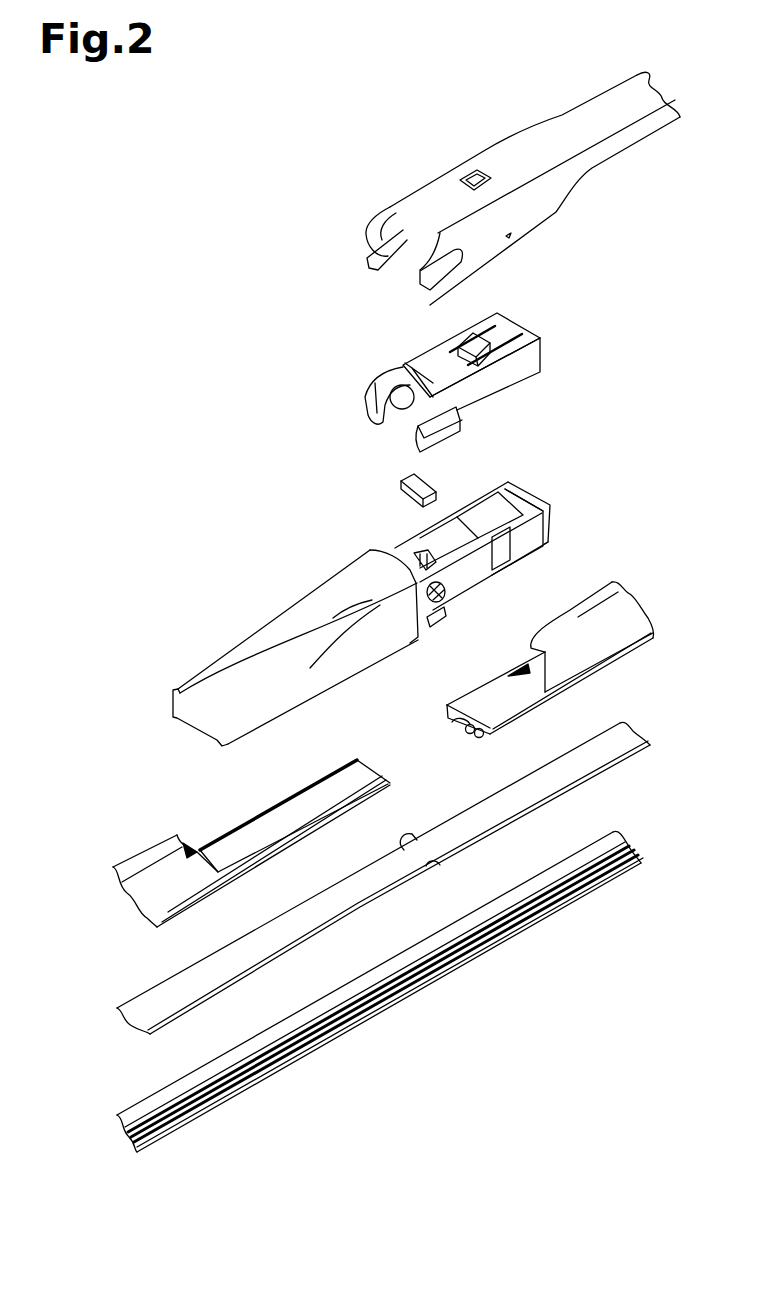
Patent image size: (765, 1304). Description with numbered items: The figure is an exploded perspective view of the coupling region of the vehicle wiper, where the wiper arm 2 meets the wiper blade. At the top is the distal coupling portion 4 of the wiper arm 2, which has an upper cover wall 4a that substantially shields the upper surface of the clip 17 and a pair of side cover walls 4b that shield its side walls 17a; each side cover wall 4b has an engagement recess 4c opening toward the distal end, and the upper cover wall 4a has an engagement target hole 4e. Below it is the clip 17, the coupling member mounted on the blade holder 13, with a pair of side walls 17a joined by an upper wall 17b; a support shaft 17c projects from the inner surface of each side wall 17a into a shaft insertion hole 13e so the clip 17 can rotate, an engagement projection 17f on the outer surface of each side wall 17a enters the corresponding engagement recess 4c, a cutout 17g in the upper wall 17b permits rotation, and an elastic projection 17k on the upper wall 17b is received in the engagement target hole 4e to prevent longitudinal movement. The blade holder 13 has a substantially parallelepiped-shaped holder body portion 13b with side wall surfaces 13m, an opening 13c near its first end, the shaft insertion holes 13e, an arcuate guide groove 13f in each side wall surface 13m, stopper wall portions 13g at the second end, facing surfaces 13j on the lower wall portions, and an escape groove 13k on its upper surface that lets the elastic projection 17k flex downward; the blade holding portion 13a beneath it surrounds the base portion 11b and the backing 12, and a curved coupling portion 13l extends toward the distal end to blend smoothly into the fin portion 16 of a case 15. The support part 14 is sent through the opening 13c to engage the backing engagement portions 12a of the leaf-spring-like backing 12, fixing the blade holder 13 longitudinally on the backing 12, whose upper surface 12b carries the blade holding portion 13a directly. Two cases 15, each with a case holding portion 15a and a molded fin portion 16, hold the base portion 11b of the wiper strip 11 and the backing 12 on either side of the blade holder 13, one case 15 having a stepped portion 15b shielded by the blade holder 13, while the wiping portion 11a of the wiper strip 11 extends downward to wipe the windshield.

The wiper arm 2 is at (630, 151).
The distal coupling portion 4 is at (504, 146).
The upper cover wall 4a is at (438, 190).
The side cover walls 4b is at (404, 255).
The engagement recess 4c is at (367, 256).
The engagement target hole 4e is at (485, 177).
The wiper strip 11 is at (290, 1020).
The wiping portion 11a is at (312, 1050).
The base portion 11b is at (232, 1062).
The backing 12 is at (329, 935).
The backing engagement portions 12a is at (441, 865).
The upper surface 12b is at (346, 888).
The blade holder 13 is at (342, 559).
The blade holding portion 13a is at (468, 607).
The holder body portion 13b is at (447, 524).
The opening 13c is at (430, 552).
The shaft insertion holes 13e is at (440, 604).
The guide groove 13f is at (515, 558).
The stopper wall portions 13g is at (551, 520).
The facing surface 13j is at (432, 628).
The escape groove 13k is at (532, 492).
The curved coupling portion 13l is at (272, 648).
The side wall surfaces 13m is at (484, 515).
The support part 14 is at (400, 490).
The case 15 is at (556, 692).
The case holding portion 15a is at (466, 736).
The stepped portion 15b is at (272, 818).
The fin portion 16 is at (592, 610).
The clip 17 is at (550, 356).
The side walls 17a is at (408, 370).
The upper wall 17b is at (437, 352).
The support shaft 17c is at (400, 412).
The engagement projection 17f is at (370, 396).
The cutout 17g is at (420, 375).
The elastic projection 17k is at (470, 337).